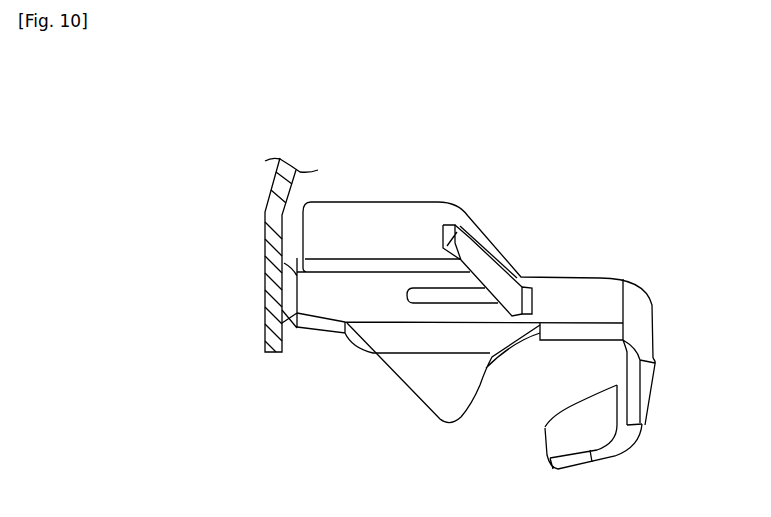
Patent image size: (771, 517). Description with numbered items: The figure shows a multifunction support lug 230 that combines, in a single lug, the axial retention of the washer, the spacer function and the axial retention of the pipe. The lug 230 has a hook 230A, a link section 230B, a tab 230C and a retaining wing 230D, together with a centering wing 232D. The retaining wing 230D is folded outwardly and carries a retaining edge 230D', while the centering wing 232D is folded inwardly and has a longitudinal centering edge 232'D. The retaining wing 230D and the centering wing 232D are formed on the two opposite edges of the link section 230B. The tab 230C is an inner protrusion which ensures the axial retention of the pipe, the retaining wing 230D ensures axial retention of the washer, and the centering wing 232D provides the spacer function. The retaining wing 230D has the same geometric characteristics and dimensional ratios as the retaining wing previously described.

The multifunction lug 230 is at (653, 210).
The hook 230A is at (643, 390).
The link section 230B is at (583, 303).
The tab 230C is at (487, 258).
The retaining wing 230D is at (404, 410).
The retaining edge 230D' is at (499, 411).
The centering wing 232D is at (397, 220).
The longitudinal centering edge 232'D is at (360, 225).